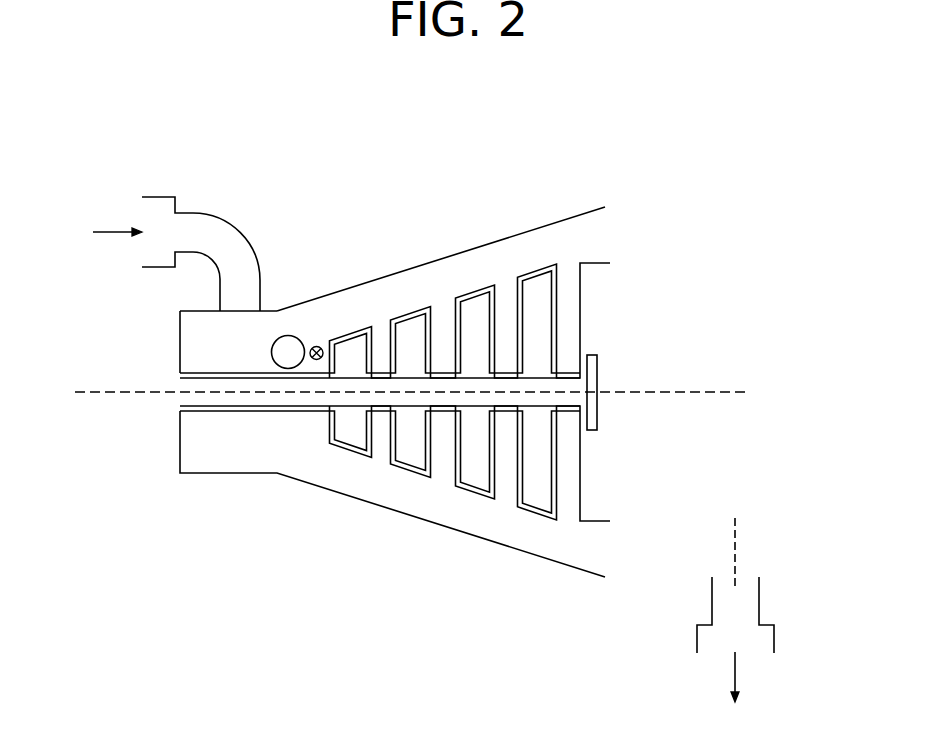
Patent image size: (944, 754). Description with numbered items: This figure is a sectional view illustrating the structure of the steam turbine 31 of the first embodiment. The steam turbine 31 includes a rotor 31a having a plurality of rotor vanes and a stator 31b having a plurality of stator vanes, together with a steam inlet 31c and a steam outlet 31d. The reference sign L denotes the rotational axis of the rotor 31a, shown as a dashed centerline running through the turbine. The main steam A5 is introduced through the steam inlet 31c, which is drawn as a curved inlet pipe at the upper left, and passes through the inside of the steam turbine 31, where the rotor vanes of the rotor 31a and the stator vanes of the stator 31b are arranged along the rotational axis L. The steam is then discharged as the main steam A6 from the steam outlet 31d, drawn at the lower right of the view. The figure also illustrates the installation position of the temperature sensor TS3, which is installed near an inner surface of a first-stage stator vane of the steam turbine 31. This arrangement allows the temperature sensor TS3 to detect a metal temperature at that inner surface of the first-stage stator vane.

The steam turbine 31 is at (425, 505).
The rotor 31a is at (587, 390).
The stator 31b is at (457, 252).
The steam inlet 31c is at (162, 195).
The steam outlet 31d is at (775, 633).
The temperature sensor TS3 is at (318, 347).
The rotational axis L is at (102, 395).
The main steam A5 is at (96, 232).
The main steam A6 is at (736, 696).